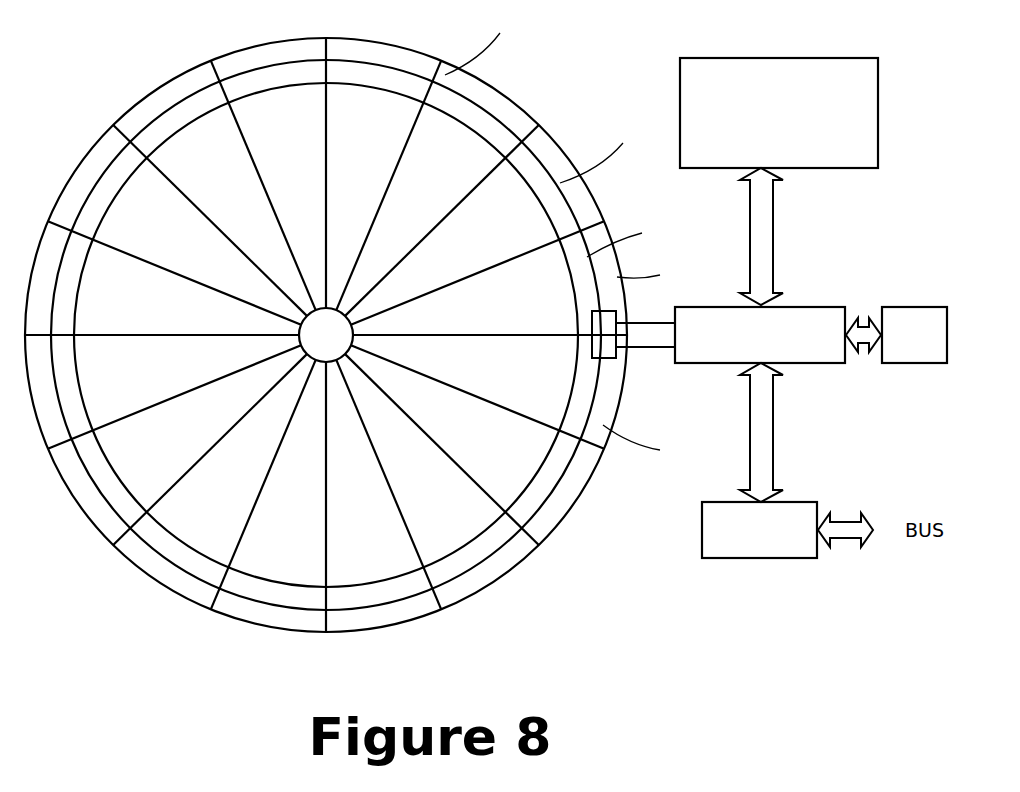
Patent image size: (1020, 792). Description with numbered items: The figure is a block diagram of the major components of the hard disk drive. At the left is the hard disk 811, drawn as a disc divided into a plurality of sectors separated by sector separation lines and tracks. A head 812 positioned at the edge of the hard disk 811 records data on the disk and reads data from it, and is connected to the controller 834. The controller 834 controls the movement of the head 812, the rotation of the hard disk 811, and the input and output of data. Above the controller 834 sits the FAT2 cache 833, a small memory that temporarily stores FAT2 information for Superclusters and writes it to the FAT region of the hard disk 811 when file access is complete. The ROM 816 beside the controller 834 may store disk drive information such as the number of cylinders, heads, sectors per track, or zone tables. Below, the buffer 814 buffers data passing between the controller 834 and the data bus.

The hard disk 811 is at (555, 530).
The head 812 is at (610, 355).
The buffer 814 is at (758, 560).
The ROM 816 is at (912, 305).
The FAT2 cache 833 is at (779, 113).
The controller 834 is at (803, 305).